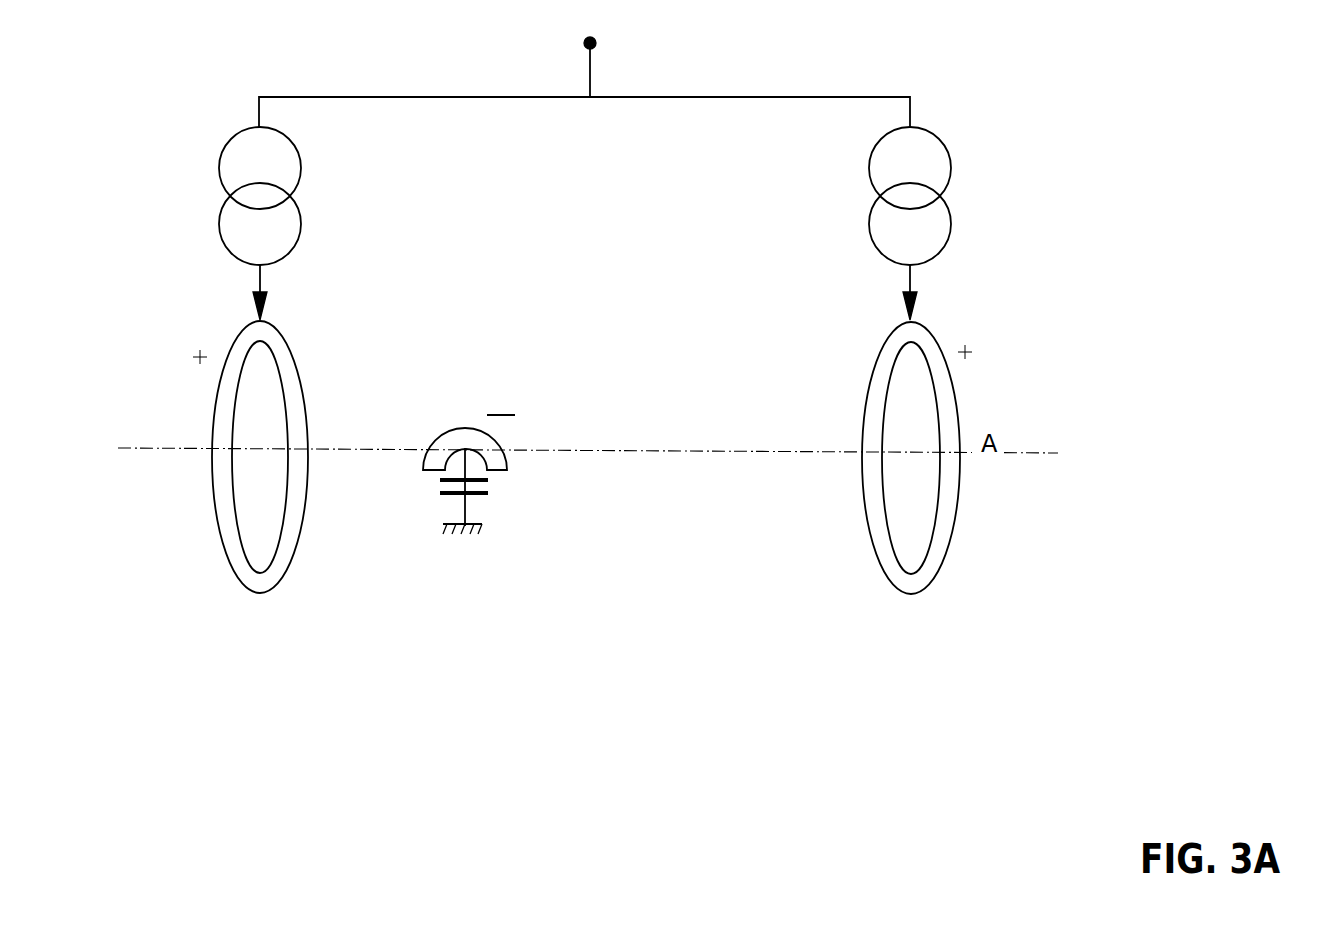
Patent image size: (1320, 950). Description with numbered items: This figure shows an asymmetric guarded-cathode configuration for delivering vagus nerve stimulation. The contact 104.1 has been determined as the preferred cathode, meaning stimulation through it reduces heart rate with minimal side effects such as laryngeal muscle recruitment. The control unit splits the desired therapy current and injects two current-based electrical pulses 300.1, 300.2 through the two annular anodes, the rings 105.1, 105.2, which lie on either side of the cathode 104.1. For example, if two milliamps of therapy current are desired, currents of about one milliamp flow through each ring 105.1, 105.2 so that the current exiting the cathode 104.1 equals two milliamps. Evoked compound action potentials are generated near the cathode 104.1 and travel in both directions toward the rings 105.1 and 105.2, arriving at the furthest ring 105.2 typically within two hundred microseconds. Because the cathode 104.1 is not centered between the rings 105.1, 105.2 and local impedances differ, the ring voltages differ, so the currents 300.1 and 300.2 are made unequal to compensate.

The electrical pulse 300.1 is at (312, 190).
The electrical pulse 300.2 is at (858, 197).
The ring 105.1 is at (260, 593).
The ring 105.2 is at (910, 595).
The contact 104.1 is at (520, 460).